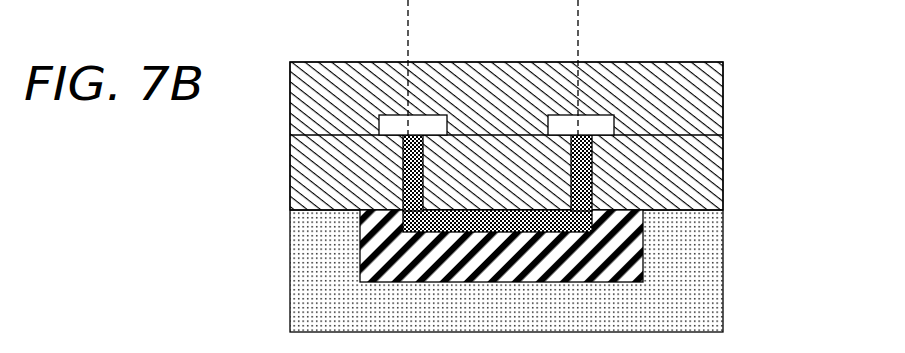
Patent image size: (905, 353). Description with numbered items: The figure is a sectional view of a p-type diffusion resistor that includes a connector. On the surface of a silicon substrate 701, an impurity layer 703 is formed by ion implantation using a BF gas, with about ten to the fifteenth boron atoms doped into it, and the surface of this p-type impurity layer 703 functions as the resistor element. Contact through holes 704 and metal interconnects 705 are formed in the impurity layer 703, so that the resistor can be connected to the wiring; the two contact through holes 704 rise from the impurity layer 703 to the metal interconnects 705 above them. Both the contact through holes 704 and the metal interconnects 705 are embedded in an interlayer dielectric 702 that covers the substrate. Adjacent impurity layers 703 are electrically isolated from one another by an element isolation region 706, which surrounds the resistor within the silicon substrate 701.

The silicon substrate 701 is at (710, 287).
The interlayer dielectric 702 is at (707, 153).
The impurity layer 703 is at (400, 220).
The contact through holes 704 is at (400, 175).
The metal interconnects 705 is at (425, 123).
The element isolation region 706 is at (627, 242).